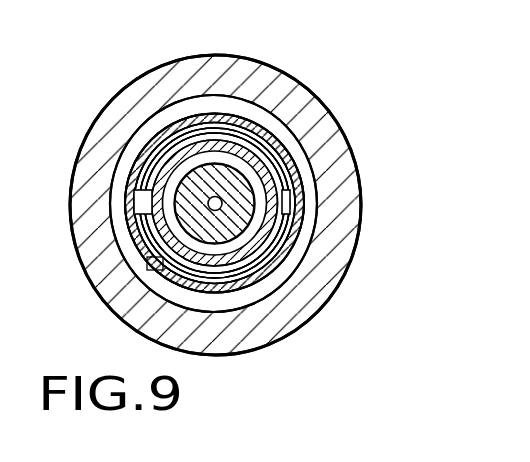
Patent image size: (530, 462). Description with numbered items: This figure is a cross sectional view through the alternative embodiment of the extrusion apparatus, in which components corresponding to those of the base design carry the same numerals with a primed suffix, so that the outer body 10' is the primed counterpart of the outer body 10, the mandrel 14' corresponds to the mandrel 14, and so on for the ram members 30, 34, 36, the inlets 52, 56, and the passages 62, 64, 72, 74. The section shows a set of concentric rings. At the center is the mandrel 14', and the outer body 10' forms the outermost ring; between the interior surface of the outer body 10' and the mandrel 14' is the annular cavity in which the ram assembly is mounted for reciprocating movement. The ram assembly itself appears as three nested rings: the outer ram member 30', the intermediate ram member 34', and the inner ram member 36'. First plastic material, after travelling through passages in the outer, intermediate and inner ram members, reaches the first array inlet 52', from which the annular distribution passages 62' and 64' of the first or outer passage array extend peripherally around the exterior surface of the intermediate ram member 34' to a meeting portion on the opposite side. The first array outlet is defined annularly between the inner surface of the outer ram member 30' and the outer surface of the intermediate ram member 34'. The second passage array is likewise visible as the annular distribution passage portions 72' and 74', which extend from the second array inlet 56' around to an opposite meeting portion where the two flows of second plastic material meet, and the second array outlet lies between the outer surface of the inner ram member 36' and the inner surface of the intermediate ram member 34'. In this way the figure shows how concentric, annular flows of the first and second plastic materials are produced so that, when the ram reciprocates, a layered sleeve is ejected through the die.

The outer body 10' is at (241, 205).
The mandrel 14' is at (281, 175).
The outer ram member 30' is at (261, 203).
The intermediate ram member 34' is at (241, 205).
The inner ram member 36' is at (272, 203).
The first array inlet 52' is at (154, 189).
The second array inlet 56' is at (278, 196).
The annular distribution passage 62' is at (161, 203).
The annular distribution passage 64' is at (209, 158).
The annular distribution passage portion 72' is at (154, 210).
The annular distribution passage portion 74' is at (215, 151).
The housing 10 is at (241, 205).
The shaft sleeve 14 is at (281, 175).
The annular clearance 30 is at (261, 203).
The housing wall 34 is at (241, 205).
The intermediate ring 36 is at (272, 203).
The key 52 is at (154, 189).
The spacer ring 56 is at (278, 196).
The inner ring 62 is at (161, 203).
The bearing ring 64 is at (209, 158).
The retaining ring 72 is at (154, 210).
The seal ring 74 is at (215, 151).